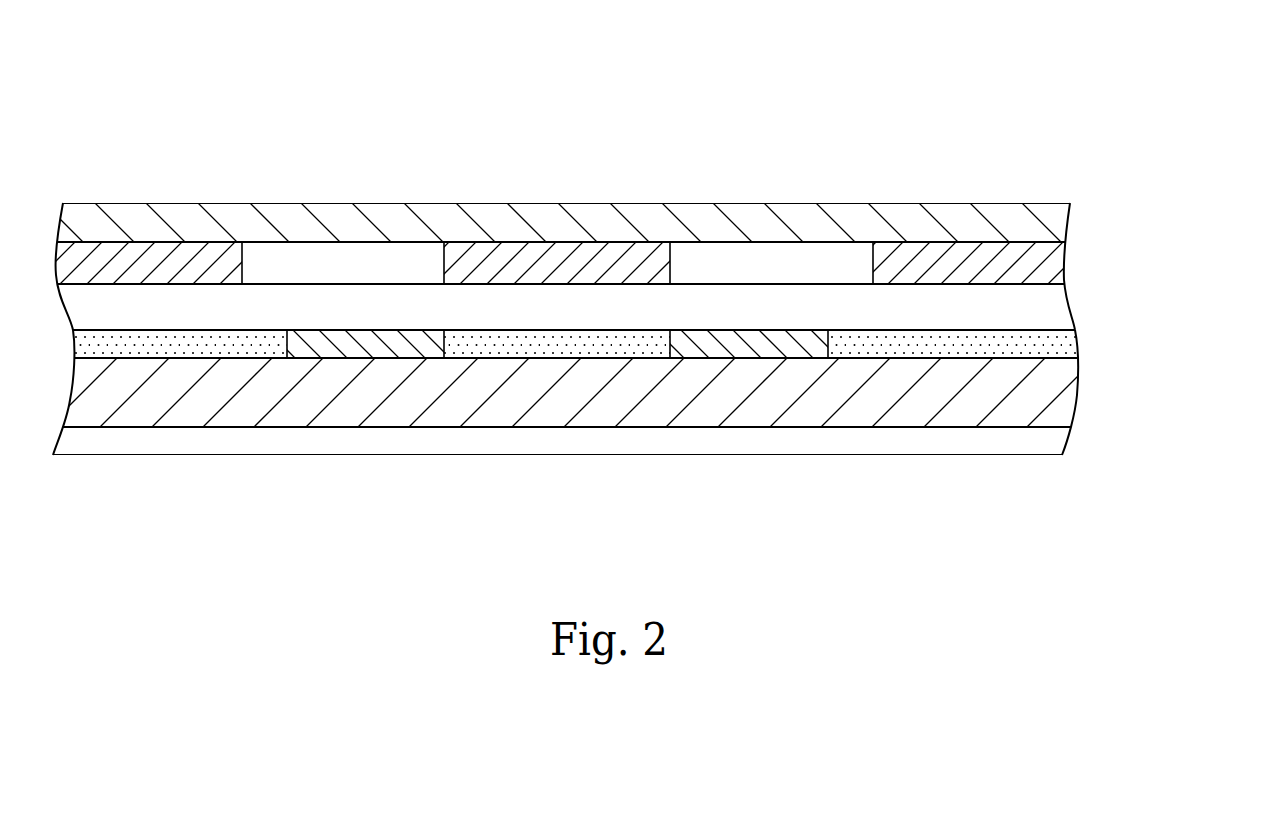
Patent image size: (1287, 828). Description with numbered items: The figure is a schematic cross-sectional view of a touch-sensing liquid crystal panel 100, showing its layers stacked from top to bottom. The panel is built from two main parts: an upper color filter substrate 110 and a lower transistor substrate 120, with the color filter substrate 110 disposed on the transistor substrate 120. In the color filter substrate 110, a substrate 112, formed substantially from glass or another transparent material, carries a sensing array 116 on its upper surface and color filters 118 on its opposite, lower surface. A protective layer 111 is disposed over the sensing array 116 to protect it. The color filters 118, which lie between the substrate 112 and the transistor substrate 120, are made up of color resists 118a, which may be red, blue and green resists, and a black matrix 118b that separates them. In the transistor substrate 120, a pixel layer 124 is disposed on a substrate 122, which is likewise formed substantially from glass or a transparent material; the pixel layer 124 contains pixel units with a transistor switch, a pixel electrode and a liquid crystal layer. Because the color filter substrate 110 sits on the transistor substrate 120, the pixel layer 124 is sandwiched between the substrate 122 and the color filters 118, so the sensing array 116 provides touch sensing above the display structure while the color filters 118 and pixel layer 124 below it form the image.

The touch-sensing liquid crystal panel 100 is at (96, 110).
The color filter substrate 110 is at (628, 373).
The protective layer 111 is at (1050, 225).
The sensing array 116 is at (1052, 260).
The substrate 112 is at (1058, 302).
The color filters 118 is at (604, 436).
The color resists 118a is at (920, 345).
The black matrix 118b is at (760, 345).
The transistor substrate 120 is at (636, 427).
The pixel layer 124 is at (1068, 385).
The substrate 122 is at (1050, 438).